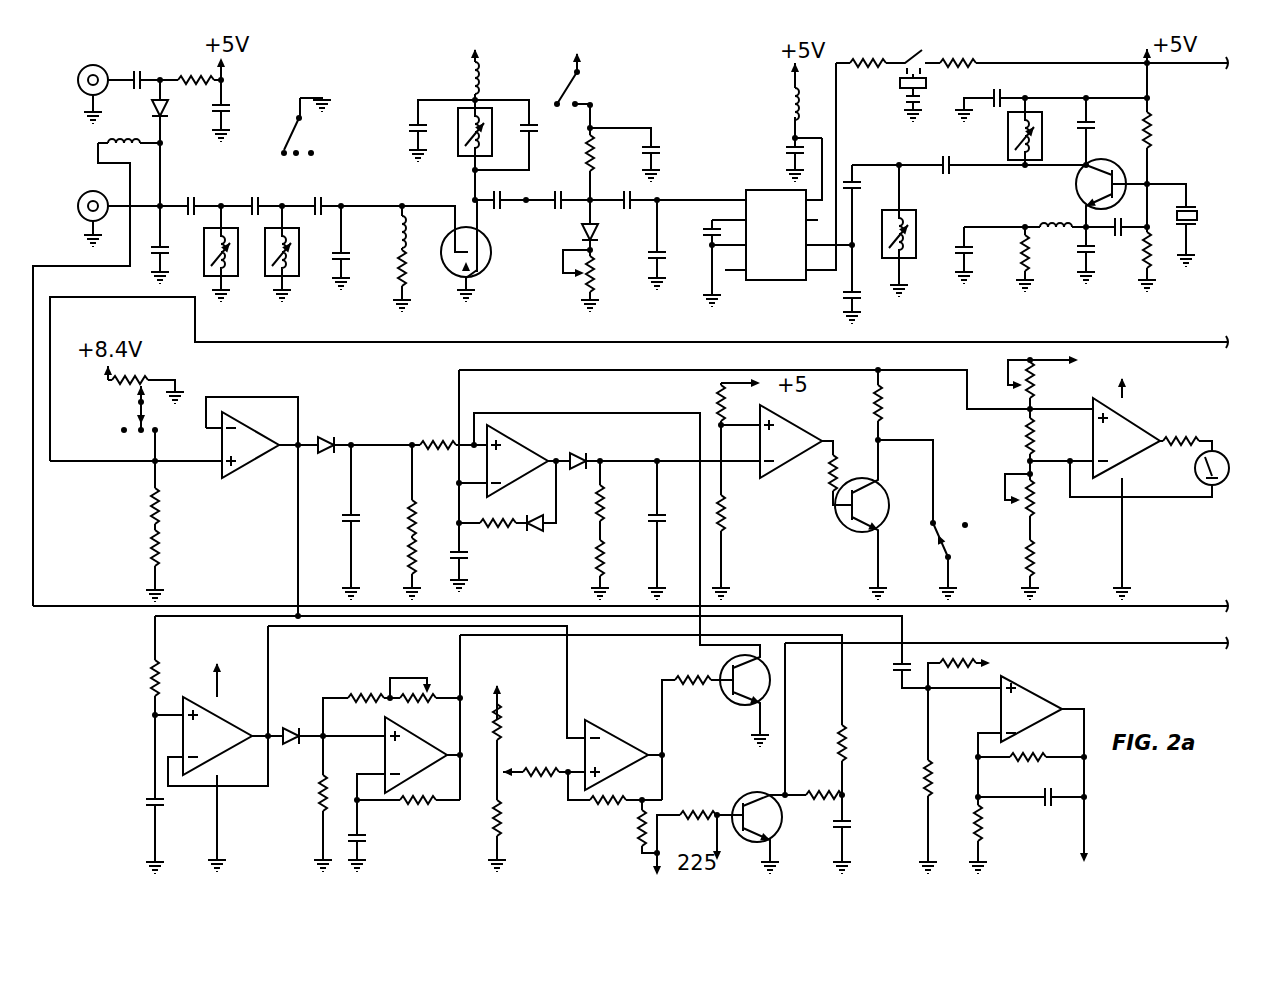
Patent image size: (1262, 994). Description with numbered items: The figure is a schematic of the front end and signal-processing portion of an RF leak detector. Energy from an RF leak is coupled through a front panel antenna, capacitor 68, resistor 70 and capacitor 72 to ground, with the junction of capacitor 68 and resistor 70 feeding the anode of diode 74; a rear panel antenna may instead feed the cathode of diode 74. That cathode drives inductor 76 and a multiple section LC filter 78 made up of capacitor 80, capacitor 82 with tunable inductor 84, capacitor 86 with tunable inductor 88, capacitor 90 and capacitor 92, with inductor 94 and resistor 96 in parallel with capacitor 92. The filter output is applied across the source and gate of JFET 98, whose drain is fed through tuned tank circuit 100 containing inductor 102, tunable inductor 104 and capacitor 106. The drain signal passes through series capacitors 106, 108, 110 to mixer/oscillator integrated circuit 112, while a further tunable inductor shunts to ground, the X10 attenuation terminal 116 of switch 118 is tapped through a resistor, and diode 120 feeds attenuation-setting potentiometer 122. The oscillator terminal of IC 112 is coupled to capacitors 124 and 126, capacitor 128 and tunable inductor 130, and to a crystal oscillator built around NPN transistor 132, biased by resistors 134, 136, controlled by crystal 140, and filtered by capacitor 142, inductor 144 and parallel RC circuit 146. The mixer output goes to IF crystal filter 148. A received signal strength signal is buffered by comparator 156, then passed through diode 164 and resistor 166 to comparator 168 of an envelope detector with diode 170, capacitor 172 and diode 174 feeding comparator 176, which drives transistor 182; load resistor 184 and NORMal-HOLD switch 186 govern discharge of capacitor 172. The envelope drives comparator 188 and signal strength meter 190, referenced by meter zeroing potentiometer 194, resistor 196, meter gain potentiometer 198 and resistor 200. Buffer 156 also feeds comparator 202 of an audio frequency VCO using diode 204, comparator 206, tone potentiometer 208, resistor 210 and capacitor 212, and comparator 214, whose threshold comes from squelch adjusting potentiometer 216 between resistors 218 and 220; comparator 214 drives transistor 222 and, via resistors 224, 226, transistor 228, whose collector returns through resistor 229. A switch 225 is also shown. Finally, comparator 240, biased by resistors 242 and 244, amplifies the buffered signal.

The capacitor 68 is at (129, 68).
The resistor 70 is at (193, 86).
The capacitor 72 is at (226, 118).
The diode 74 is at (166, 112).
The inductor 76 is at (135, 125).
The multiple section LC filter 78 is at (215, 201).
The capacitor 80 is at (163, 247).
The capacitor 82 is at (187, 197).
The tunable inductor 84 is at (204, 255).
The capacitor 86 is at (259, 200).
The tunable inductor 88 is at (267, 263).
The capacitor 90 is at (323, 200).
The capacitor 92 is at (338, 260).
The inductor 94 is at (398, 240).
The resistor 96 is at (397, 282).
The JFET 98 is at (455, 274).
The tuned tank circuit 100 is at (498, 84).
The inductor 102 is at (472, 75).
The tunable inductor 104 is at (462, 136).
The capacitor 106 is at (416, 122).
The capacitor 108 is at (568, 192).
The capacitor 110 is at (620, 192).
The double-balanced mixer/oscillator integrated circuit 112 is at (767, 190).
The X10 attenuation terminal 116 is at (592, 104).
The double pole, three position switch 118 is at (593, 77).
The diode 120 is at (594, 240).
The attenuation-setting potentiometer 122 is at (587, 282).
The capacitor 124 is at (843, 299).
The capacitor 126 is at (858, 189).
The capacitor 128 is at (933, 162).
The tunable inductor 130 is at (917, 248).
The NPN transistor 132 is at (1082, 189).
The resistor 134 is at (1142, 135).
The resistor 136 is at (1143, 248).
The crystal 140 is at (1196, 206).
The capacitor 142 is at (1080, 254).
The inductor 144 is at (1054, 232).
The parallel RC circuit 146 is at (972, 218).
The IF crystal filter 148 is at (911, 61).
The comparator 156 is at (251, 420).
The diode 164 is at (335, 440).
The resistor 166 is at (433, 438).
The comparator 168 is at (516, 455).
The diode 170 is at (535, 530).
The capacitor 172 is at (463, 562).
The diode 174 is at (592, 458).
The comparator 176 is at (803, 420).
The NPN transistor 182 is at (847, 527).
The load resistor 184 is at (890, 406).
The NORMal-HOLD SPDT switch 186 is at (948, 507).
The comparator 188 is at (1136, 432).
The signal strength meter 190 is at (1195, 469).
The meter zeroing potentiometer 194 is at (1037, 384).
The resistor 196 is at (1026, 426).
The meter gain potentiometer 198 is at (1039, 506).
The resistor 200 is at (1037, 563).
The comparator 202 is at (223, 743).
The diode 204 is at (291, 724).
The comparator 206 is at (383, 766).
The tone potentiometer 208 is at (378, 671).
The resistor 210 is at (852, 733).
The capacitor 212 is at (832, 831).
The comparator 214 is at (616, 727).
The squelch adjusting potentiometer 216 is at (493, 778).
The resistor 218 is at (501, 727).
The resistor 220 is at (503, 816).
The NPN transistor 222 is at (742, 704).
The resistor 224 is at (636, 829).
The switch 225 is at (290, 130).
The resistor 226 is at (688, 808).
The transistor 228 is at (746, 805).
The resistor 229 is at (816, 793).
The comparator 240 is at (1041, 699).
The resistor 242 is at (965, 670).
The resistor 244 is at (923, 776).